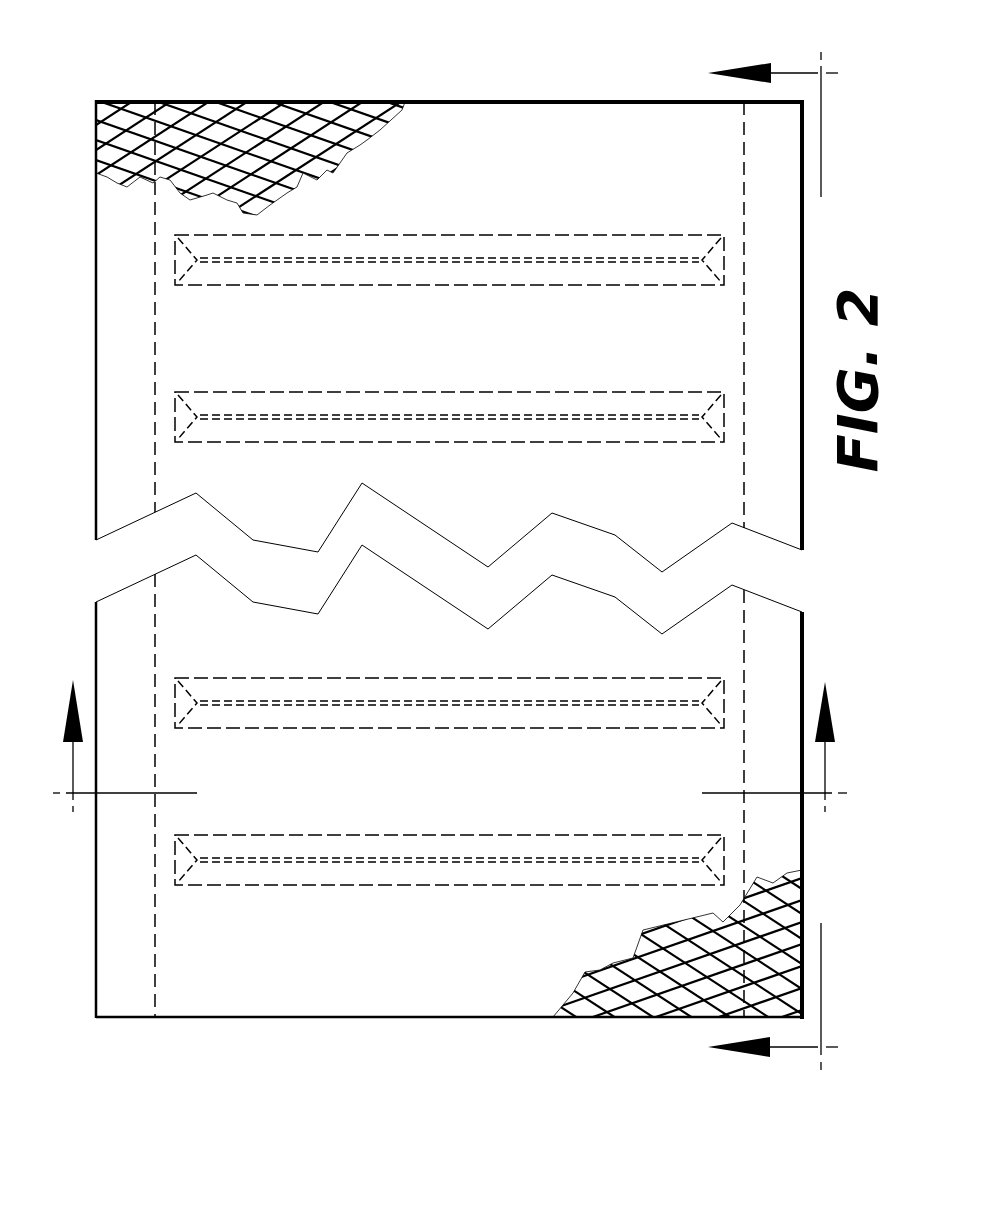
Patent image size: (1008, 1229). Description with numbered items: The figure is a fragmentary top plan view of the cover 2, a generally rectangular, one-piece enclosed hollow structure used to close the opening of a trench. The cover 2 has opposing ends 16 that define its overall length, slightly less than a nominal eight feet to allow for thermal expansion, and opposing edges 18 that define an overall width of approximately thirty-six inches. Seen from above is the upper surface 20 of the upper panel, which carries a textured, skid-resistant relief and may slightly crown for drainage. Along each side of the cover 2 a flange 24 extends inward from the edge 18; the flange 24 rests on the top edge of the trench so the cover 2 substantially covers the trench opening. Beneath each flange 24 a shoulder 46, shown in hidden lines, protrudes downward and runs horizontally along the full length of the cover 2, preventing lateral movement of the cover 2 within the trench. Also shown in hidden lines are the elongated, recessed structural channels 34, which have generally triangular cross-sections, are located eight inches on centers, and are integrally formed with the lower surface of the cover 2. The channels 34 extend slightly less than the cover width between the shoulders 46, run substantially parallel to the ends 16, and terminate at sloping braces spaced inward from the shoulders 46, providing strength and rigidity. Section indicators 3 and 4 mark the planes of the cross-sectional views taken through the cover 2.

The cover 2 is at (424, 582).
The opposing ends 16 is at (428, 550).
The opposing edges 18 is at (96, 386).
The upper surface 20 is at (485, 933).
The flange 24 is at (140, 222).
The structural channels 34 is at (315, 840).
The shoulder 46 is at (745, 428).
The section line 3- 3 is at (760, 557).
The section line 4- 4 is at (448, 746).